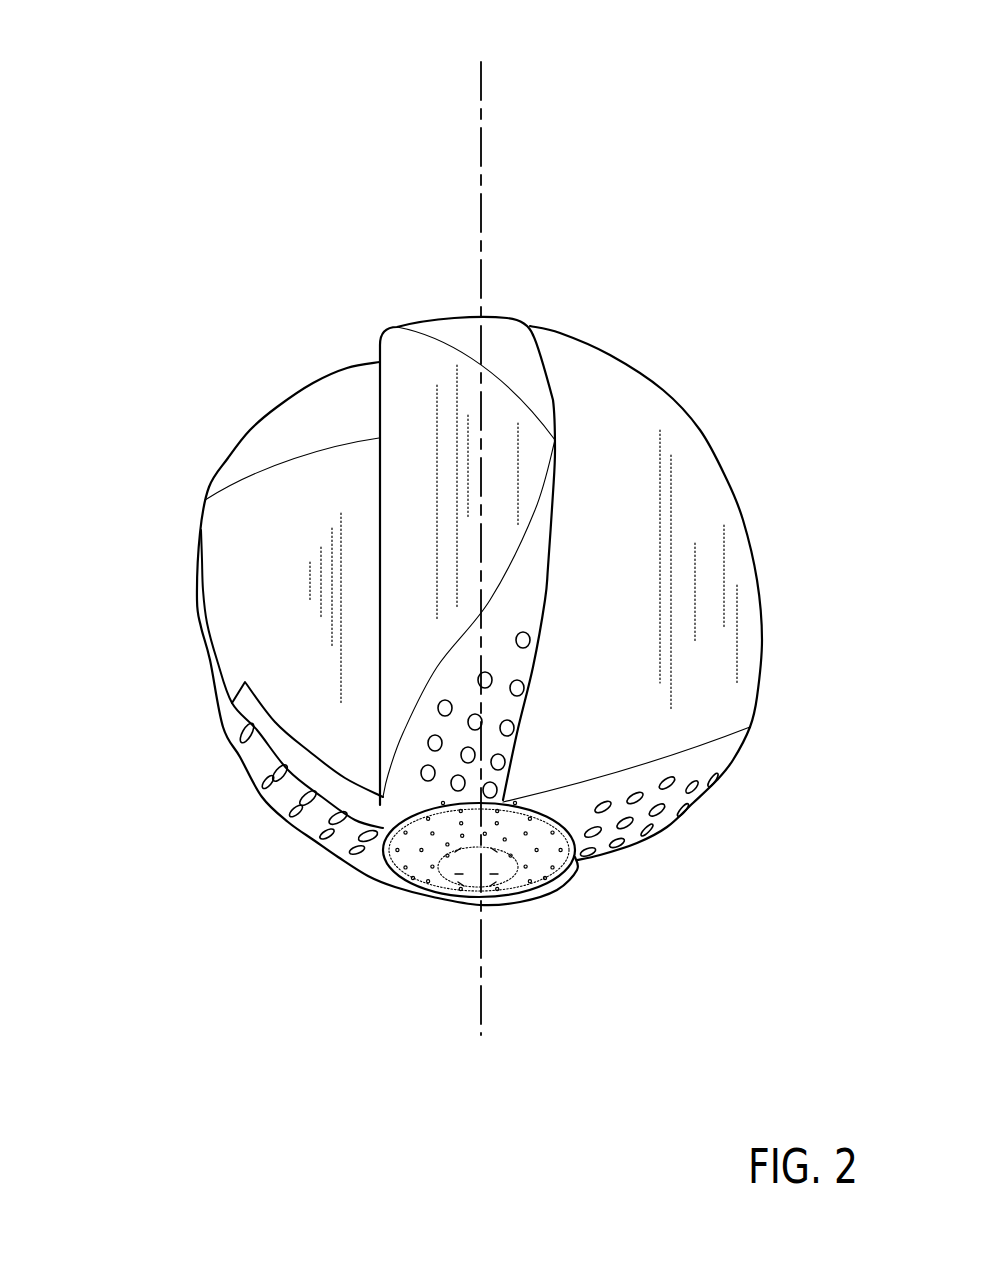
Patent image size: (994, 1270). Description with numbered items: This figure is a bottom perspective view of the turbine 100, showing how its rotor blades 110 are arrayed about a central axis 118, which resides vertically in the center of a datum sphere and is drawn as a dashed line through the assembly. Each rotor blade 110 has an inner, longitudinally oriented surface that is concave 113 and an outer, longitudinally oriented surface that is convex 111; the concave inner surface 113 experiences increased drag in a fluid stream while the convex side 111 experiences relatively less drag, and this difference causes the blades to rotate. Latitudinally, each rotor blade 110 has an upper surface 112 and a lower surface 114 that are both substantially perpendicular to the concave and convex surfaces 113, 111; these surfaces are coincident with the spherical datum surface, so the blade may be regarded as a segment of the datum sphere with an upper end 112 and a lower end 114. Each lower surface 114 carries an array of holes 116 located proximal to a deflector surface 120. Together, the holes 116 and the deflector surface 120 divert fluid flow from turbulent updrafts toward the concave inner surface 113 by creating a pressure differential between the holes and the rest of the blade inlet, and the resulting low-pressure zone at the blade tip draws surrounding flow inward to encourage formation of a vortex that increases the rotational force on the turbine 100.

The turbine 100 is at (142, 46).
The rotor blade 110 is at (788, 412).
The convex outer surface 111 is at (400, 395).
The upper surface 112 is at (488, 340).
The concave inner surface 113 is at (279, 565).
The lower surface 114 is at (223, 710).
The holes 116 is at (532, 645).
The central axis 118 is at (480, 1028).
The deflector surface 120 is at (300, 760).